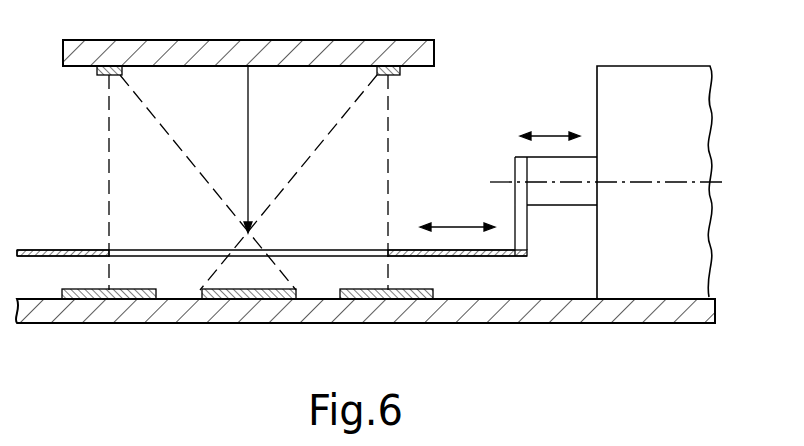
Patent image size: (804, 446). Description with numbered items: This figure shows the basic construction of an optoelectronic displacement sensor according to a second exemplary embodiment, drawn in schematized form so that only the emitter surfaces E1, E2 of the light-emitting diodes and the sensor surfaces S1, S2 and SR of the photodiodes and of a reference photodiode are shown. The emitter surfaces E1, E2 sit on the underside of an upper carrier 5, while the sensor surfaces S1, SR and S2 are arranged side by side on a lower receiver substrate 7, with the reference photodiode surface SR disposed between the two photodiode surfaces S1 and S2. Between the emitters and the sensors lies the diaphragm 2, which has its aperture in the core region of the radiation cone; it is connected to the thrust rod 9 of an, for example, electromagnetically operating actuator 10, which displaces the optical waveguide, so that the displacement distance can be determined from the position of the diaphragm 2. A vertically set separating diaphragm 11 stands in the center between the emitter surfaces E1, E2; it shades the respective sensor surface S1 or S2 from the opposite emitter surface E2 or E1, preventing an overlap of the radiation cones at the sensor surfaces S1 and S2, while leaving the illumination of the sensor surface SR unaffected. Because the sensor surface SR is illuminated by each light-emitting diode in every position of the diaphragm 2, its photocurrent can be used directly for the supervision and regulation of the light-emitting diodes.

The emitter carrier plate 5 is at (337, 52).
The emitter surface E1 is at (98, 76).
The emitter surface E2 is at (400, 76).
The separating diaphragm 11 is at (250, 137).
The diaphragm 2 is at (77, 250).
The sensor surface S1 is at (62, 289).
The sensor surface of reference photodiode SR is at (296, 288).
The sensor surface S2 is at (433, 288).
The base plate 7 is at (53, 312).
The thrust rod 9 is at (555, 190).
The actuator 10 is at (667, 252).